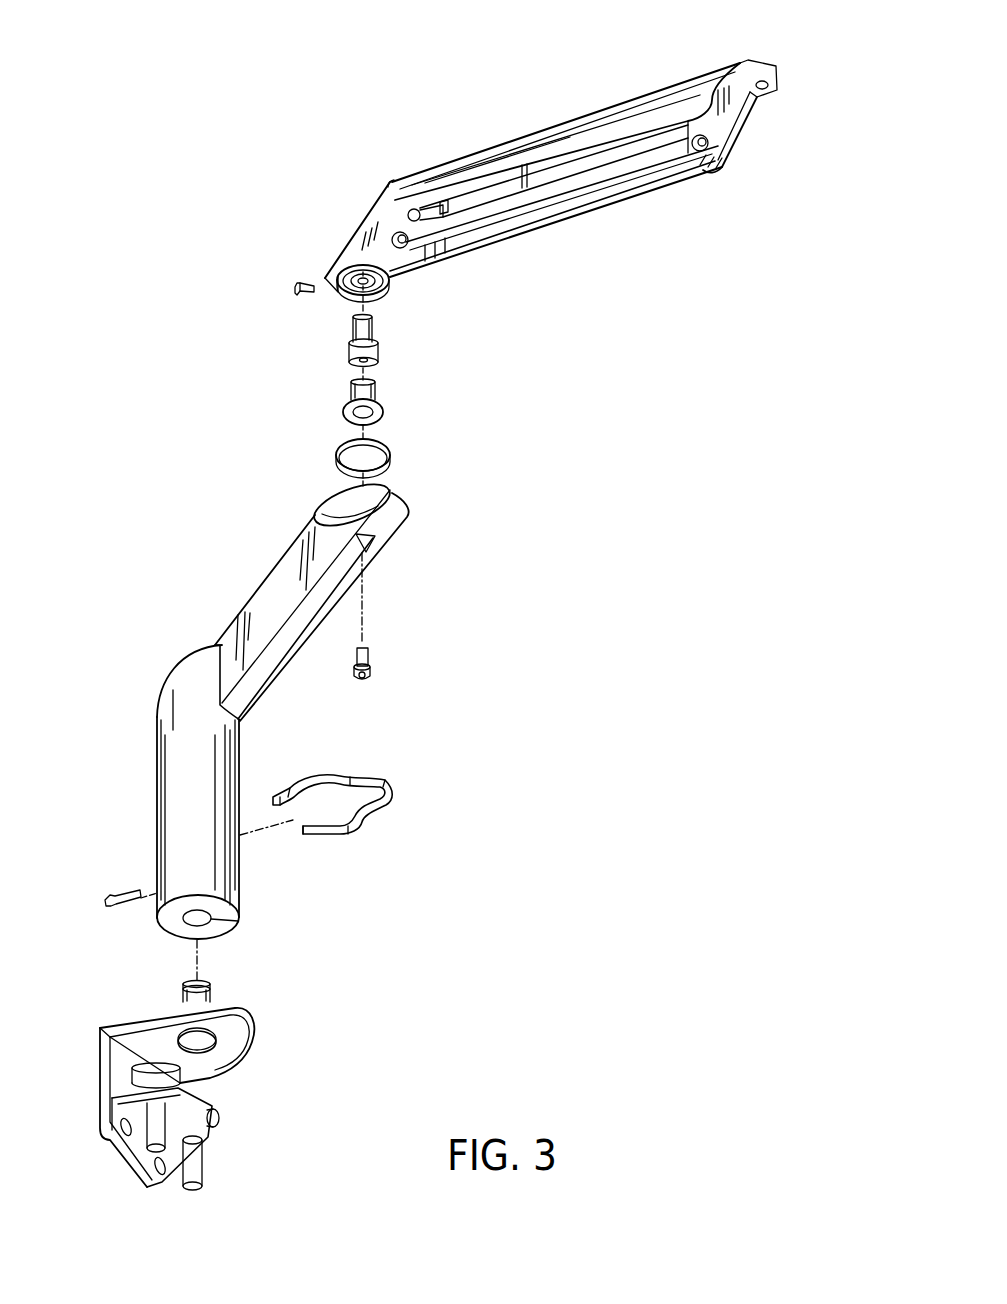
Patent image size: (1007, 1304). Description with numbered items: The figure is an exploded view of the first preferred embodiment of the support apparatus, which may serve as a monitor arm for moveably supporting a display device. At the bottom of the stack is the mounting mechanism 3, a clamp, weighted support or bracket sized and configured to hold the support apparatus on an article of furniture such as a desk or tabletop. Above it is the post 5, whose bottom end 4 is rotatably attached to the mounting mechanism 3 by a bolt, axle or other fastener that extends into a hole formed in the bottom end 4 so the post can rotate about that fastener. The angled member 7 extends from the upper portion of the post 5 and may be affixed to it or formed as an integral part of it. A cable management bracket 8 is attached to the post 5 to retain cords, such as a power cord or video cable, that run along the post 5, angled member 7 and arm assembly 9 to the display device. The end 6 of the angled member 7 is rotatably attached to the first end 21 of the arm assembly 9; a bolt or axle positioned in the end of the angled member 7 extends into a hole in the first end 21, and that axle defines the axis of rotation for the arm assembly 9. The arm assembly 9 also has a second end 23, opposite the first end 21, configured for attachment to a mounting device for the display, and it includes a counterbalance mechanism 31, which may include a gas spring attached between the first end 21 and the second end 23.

The mounting mechanism 3 is at (98, 1106).
The bottom end 4 is at (152, 995).
The post 5 is at (157, 815).
The end 6 is at (397, 398).
The angled member 7 is at (250, 595).
The cable management bracket 8 is at (378, 775).
The arm assembly 9 is at (615, 218).
The first end 21 is at (365, 238).
The second end 23 is at (713, 100).
The counterbalance mechanism 31 is at (466, 190).